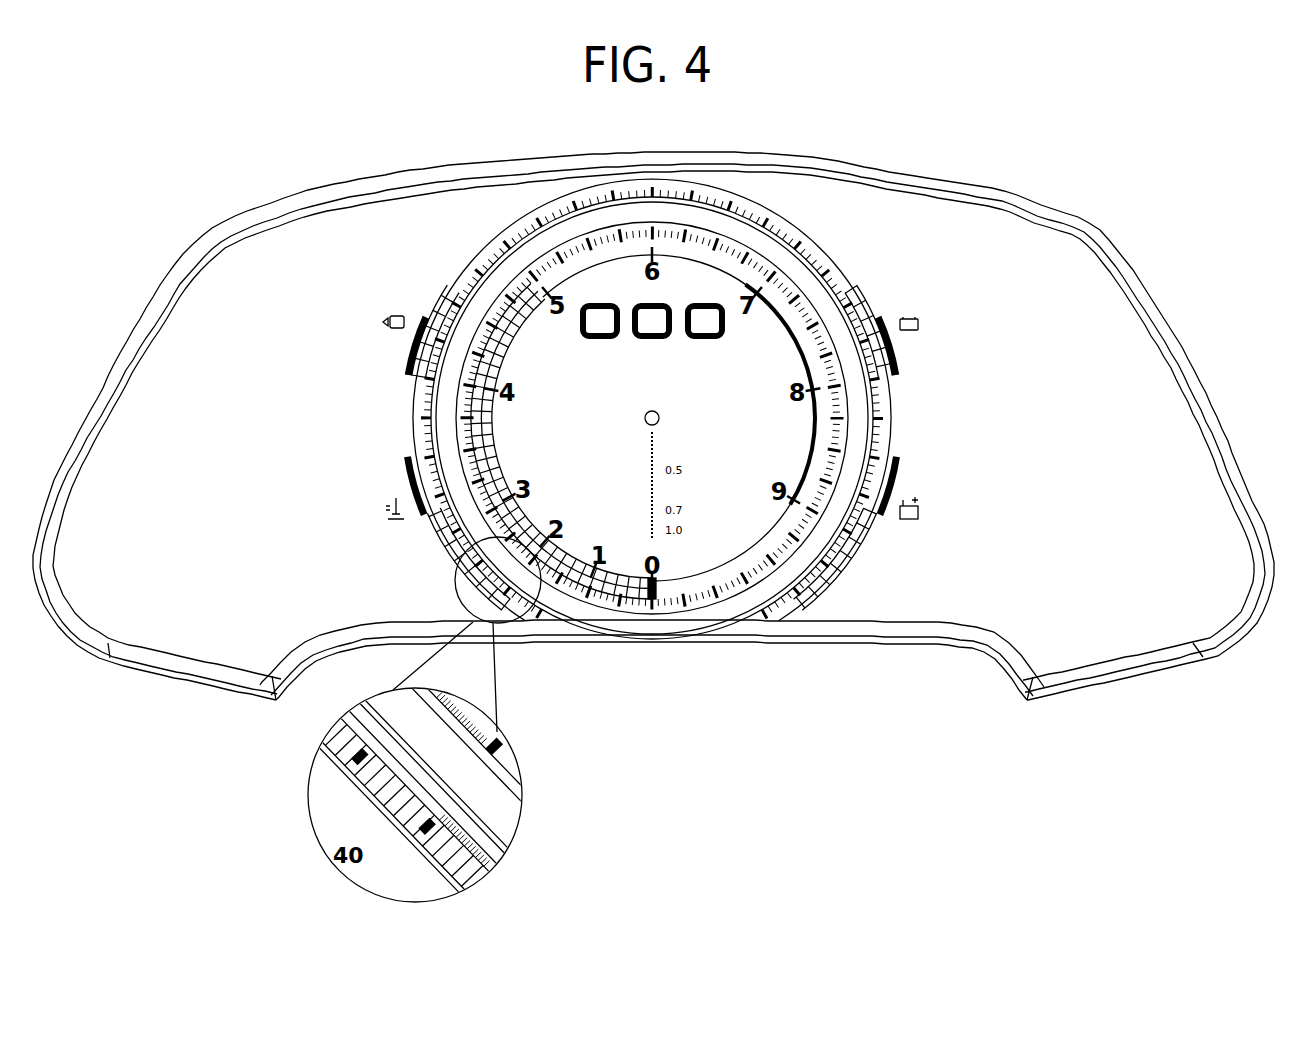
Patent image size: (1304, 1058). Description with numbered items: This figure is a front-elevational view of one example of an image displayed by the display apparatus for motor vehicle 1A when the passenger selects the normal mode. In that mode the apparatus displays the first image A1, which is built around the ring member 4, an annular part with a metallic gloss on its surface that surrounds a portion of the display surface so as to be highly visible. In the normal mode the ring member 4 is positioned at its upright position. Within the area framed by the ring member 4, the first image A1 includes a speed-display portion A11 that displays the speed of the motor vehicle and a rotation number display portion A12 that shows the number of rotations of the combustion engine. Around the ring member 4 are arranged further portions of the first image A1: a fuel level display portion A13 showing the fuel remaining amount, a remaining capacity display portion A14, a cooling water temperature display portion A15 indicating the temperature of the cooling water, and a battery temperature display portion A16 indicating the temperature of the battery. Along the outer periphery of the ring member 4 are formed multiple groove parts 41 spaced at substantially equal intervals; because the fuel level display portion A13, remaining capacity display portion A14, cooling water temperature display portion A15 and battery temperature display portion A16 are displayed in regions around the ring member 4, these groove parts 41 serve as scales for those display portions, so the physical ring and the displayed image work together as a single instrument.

The display apparatus for motor vehicle 1A is at (1077, 181).
The first image A1 is at (882, 233).
The ring member 4 is at (768, 250).
The groove parts 41 is at (518, 602).
The speed-display portion A11 is at (607, 293).
The rotation number display portion A12 is at (529, 348).
The fuel level display portion A13 is at (388, 344).
The remaining capacity display portion A14 is at (906, 299).
The cooling water temperature display portion A15 is at (398, 536).
The battery temperature display portion A16 is at (902, 532).